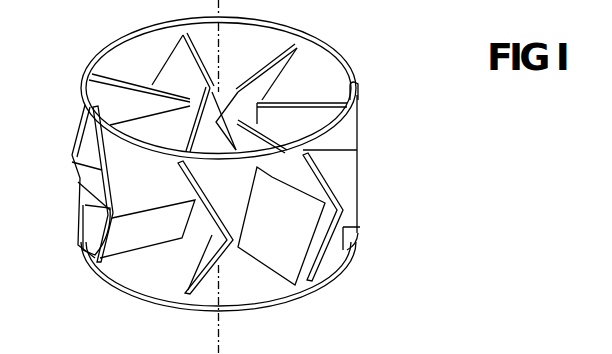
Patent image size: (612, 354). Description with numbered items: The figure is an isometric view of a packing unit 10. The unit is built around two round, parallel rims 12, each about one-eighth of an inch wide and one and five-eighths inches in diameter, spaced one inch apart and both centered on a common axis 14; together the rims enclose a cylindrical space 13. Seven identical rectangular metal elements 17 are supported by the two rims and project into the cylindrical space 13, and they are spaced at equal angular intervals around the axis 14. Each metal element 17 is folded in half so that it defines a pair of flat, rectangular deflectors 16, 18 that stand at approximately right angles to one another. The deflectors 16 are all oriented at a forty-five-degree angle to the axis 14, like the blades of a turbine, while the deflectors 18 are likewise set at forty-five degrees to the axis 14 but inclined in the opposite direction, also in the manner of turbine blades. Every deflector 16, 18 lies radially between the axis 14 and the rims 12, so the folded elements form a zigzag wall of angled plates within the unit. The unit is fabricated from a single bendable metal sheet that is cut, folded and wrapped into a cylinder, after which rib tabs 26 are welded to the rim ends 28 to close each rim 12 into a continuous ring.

The packing unit 10 is at (373, 59).
The rims 12 is at (103, 48).
The cylindrical space 13 is at (243, 268).
The axis 14 is at (223, 7).
The deflectors 16 is at (168, 67).
The metal elements 17 is at (360, 233).
The deflectors 18 is at (49, 176).
The rib tabs 26 is at (326, 102).
The rim ends 28 is at (357, 85).